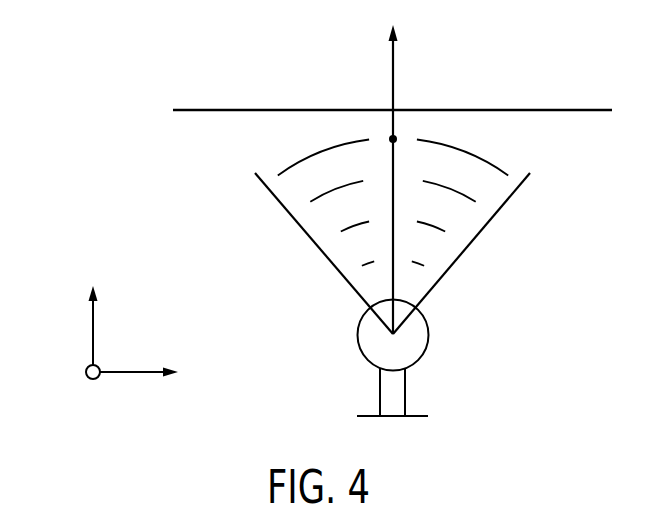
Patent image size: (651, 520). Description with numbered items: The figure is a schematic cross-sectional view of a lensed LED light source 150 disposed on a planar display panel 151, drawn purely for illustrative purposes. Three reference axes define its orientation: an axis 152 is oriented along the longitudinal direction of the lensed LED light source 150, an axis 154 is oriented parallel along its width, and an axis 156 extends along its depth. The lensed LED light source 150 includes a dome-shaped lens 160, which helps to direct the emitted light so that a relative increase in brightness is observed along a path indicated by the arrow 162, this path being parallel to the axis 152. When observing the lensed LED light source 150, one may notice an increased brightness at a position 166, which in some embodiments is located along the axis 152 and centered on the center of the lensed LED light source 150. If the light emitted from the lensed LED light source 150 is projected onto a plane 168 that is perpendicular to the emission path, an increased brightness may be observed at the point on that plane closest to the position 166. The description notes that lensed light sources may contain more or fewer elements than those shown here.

The lensed LED light source 150 is at (500, 388).
The planar display panel 151 is at (393, 416).
The axis 152 is at (91, 333).
The axis 154 is at (130, 369).
The axis 156 is at (86, 373).
The dome-shaped lens 160 is at (408, 298).
The arrow 162 is at (393, 63).
The position 166 is at (395, 138).
The plane 168 is at (196, 96).